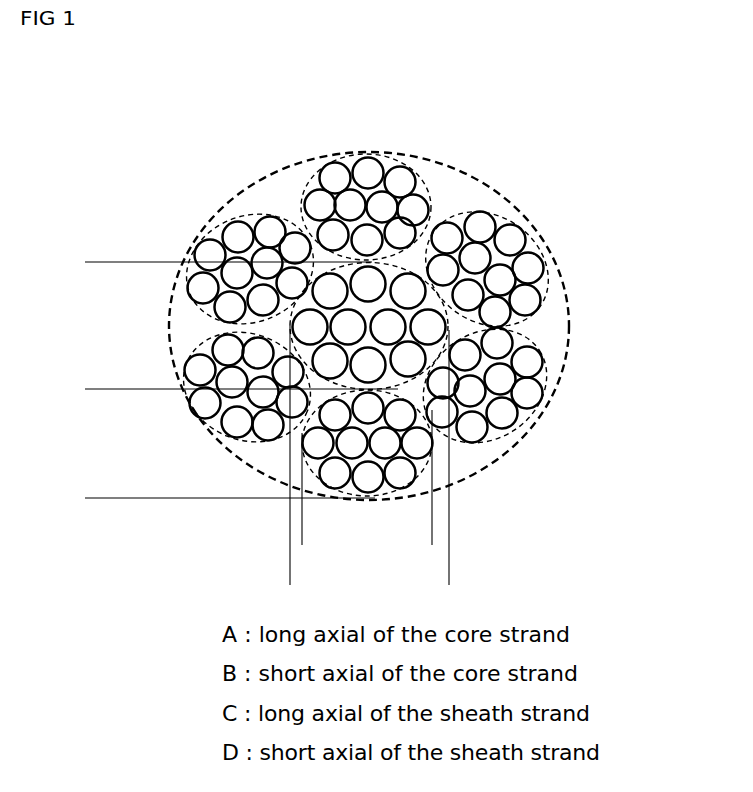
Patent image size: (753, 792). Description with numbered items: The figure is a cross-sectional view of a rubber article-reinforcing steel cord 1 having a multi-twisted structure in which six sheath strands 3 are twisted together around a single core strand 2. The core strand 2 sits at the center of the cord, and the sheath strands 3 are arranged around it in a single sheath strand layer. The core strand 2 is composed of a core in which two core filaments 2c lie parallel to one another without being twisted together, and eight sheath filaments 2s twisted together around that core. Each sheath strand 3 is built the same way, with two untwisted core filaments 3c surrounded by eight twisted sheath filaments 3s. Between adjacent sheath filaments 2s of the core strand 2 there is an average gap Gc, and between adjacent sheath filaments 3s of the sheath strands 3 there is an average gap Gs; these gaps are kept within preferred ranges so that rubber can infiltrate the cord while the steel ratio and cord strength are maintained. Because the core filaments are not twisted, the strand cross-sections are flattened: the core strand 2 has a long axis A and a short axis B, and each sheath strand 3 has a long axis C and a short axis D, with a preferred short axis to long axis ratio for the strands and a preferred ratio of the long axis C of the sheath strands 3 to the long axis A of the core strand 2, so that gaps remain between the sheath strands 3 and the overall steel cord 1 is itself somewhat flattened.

The steel cord 1 is at (433, 270).
The core strand 2 is at (662, 400).
The core filaments of core strand 2c is at (496, 369).
The sheath filaments of core strand 2s is at (475, 374).
The sheath strand 3 is at (667, 212).
The core filaments of sheath strand 3c is at (563, 255).
The sheath filaments of sheath strand 3s is at (547, 270).
The long axis of the core strand A is at (448, 572).
The short axis of the core strand B is at (117, 262).
The long axis of the sheath strand C is at (432, 537).
The short axis of the sheath strand D is at (135, 389).
The average gap between adjacent sheath filaments of core strand Gc is at (390, 283).
The average gap between adjacent sheath filaments of sheath strand Gs is at (503, 226).